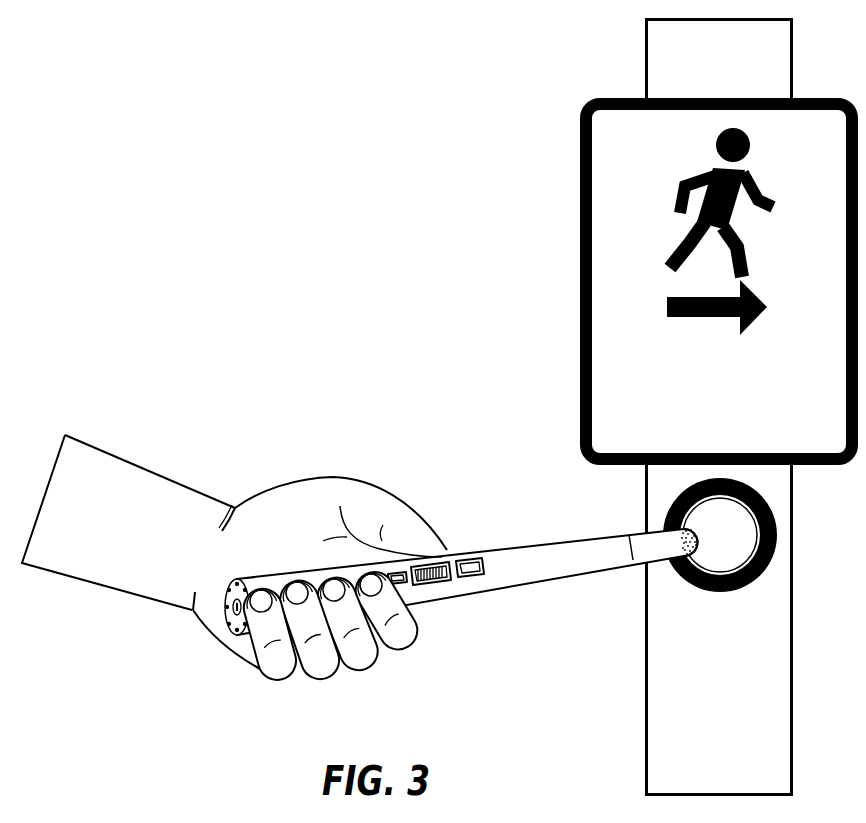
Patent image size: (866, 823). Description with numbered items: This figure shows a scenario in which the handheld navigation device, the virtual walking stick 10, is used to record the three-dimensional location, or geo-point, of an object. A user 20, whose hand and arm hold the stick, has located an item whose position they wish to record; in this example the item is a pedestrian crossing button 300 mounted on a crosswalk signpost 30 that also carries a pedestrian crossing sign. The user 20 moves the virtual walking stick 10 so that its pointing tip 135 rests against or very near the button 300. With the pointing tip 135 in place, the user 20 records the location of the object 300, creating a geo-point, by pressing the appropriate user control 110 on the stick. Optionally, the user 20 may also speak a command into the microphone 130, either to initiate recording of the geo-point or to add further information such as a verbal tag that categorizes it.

The virtual walking stick 10 is at (547, 530).
The user 20 is at (262, 478).
The crosswalk signpost 30 is at (552, 232).
The user control 110 is at (470, 560).
The microphone 130 is at (660, 538).
The pointing tip 135 is at (640, 559).
The pedestrian crossing button 300 is at (688, 588).